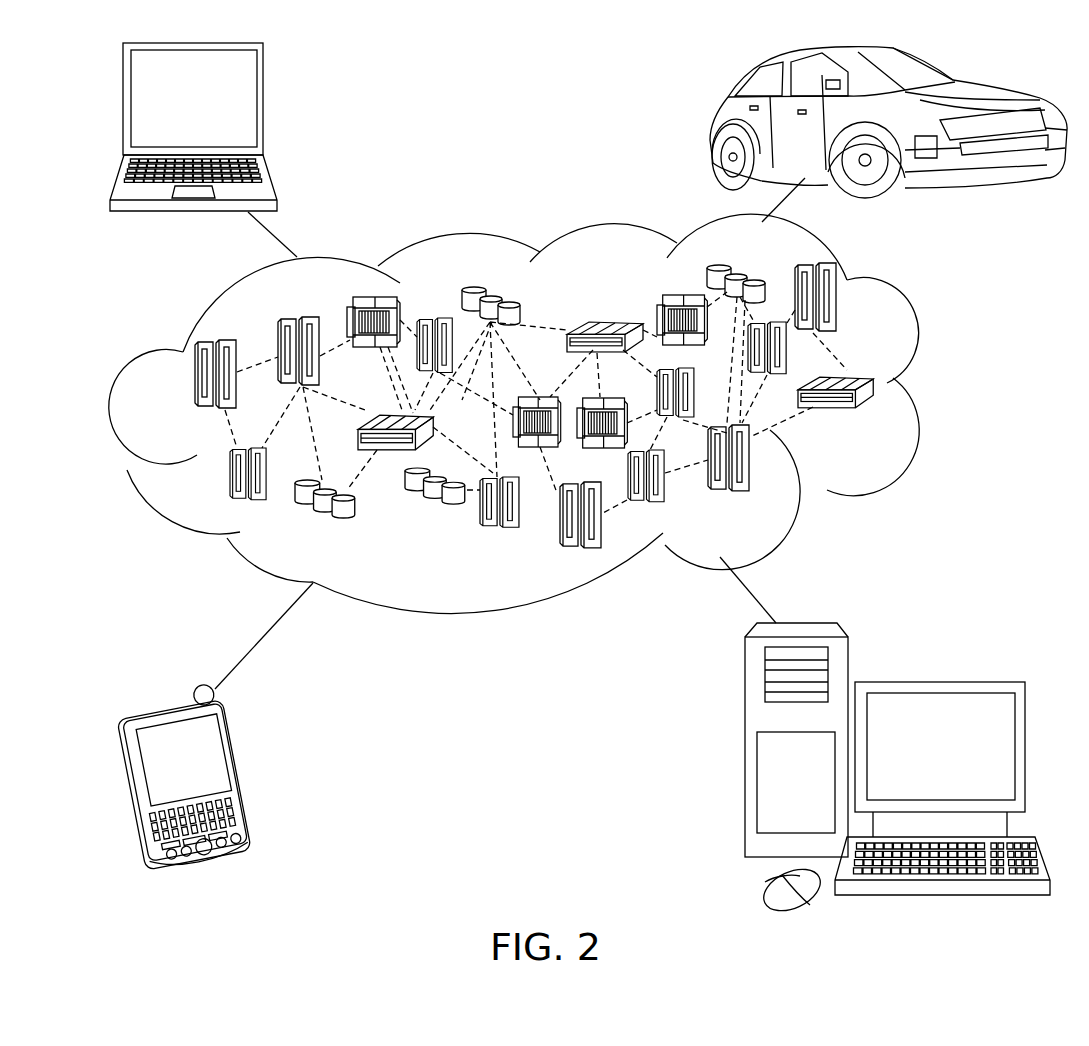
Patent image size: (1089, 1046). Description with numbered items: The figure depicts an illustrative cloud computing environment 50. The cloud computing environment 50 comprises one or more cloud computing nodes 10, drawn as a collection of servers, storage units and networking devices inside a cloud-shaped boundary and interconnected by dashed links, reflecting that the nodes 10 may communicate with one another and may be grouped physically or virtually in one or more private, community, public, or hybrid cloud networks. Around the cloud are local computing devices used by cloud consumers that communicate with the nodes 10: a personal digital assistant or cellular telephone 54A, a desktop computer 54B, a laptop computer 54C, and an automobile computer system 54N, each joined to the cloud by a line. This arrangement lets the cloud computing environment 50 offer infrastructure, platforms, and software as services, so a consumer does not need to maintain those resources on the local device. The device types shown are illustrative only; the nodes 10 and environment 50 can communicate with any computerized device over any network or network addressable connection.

The cloud computing node 10 is at (880, 418).
The cloud computing environment 50 is at (935, 383).
The personal digital assistant or cellular telephone 54A is at (258, 775).
The desktop computer 54B is at (938, 682).
The laptop computer 54C is at (265, 106).
The automobile computer system 54N is at (710, 122).